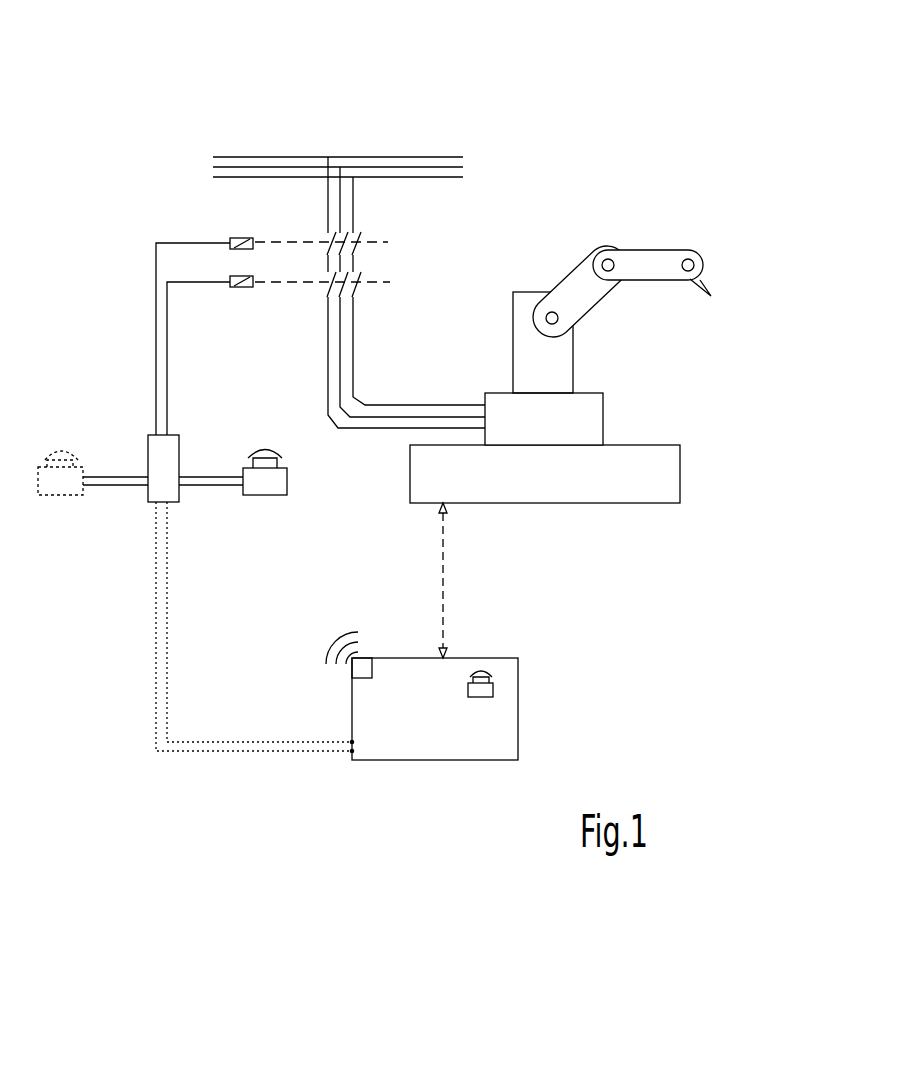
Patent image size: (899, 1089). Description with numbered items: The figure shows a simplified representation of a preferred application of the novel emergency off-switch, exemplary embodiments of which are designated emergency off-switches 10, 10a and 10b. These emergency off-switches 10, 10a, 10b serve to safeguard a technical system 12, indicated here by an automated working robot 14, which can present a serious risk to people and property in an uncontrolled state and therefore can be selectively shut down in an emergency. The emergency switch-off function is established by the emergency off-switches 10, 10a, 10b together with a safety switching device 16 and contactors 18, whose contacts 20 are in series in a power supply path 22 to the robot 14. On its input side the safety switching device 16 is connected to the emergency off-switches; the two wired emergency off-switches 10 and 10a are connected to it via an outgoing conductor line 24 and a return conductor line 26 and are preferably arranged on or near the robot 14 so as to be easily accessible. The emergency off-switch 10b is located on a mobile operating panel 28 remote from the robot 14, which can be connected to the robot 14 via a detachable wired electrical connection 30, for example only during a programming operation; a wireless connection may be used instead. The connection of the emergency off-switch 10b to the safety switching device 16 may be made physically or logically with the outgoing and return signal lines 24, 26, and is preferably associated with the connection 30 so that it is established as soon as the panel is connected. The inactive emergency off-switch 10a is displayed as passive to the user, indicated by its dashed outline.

The emergency off-switch 10 is at (272, 482).
The emergency off-switch 10a is at (58, 485).
The emergency off-switch 10b is at (488, 688).
The technical system 12 is at (660, 163).
The robot 14 is at (637, 260).
The safety switching device 16 is at (177, 435).
The contactors 18 is at (228, 237).
The contacts 20 is at (343, 258).
The power supply path 22 is at (340, 177).
The outgoing conductor line 24 is at (123, 474).
The return conductor line 26 is at (113, 487).
The mobile operating panel 28 is at (447, 728).
The detachable wired electrical connection 30 is at (445, 584).